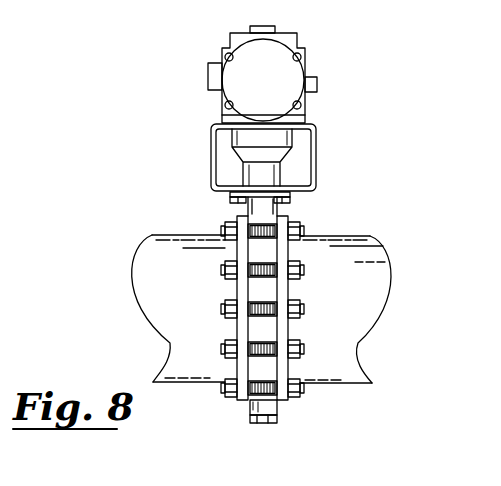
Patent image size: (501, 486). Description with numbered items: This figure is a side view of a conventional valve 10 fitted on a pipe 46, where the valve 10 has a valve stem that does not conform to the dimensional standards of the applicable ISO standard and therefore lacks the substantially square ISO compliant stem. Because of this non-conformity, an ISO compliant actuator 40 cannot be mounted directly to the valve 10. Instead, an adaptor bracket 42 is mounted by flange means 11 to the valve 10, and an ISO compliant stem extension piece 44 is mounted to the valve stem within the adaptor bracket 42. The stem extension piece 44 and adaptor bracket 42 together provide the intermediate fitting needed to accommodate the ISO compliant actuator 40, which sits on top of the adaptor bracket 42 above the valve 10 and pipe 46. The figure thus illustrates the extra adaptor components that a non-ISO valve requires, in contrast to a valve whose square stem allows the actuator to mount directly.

The valve 10 is at (263, 362).
The flange means 11 is at (300, 196).
The ISO compliant actuator 40 is at (240, 67).
The adaptor bracket 42 is at (211, 149).
The ISO compliant stem extension piece 44 is at (280, 141).
The pipe 46 is at (181, 268).